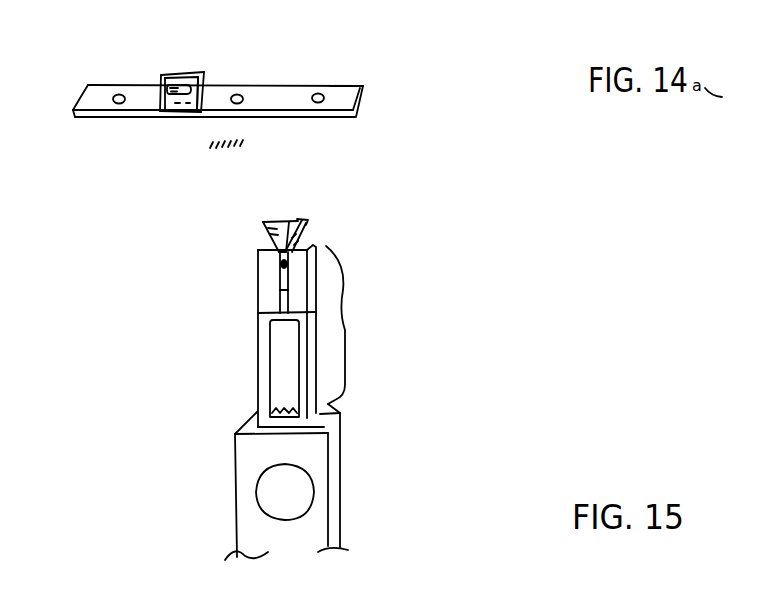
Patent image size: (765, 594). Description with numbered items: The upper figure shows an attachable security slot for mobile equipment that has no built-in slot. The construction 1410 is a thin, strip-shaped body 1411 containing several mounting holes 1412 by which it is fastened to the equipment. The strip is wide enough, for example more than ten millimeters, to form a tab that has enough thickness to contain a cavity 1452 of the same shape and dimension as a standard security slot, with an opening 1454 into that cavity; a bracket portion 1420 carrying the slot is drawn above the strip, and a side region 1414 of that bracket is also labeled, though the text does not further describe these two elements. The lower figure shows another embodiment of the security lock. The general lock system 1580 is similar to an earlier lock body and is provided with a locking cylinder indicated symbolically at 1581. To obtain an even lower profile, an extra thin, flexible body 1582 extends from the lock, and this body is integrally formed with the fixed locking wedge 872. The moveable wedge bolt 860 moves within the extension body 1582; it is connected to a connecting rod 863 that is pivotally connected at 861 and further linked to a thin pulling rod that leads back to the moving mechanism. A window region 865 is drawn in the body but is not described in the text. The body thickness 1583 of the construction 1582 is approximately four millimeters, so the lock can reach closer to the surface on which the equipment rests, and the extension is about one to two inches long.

In FIG. 14A, the attachable security slot construction 1410 is at (372, 102).
In FIG. 14A, the body 1411 is at (349, 84).
In FIG. 14A, the mounting holes 1412 is at (243, 95).
In FIG. 14A, the bracket side 1414 is at (198, 116).
In FIG. 14A, the bracket 1420 is at (184, 73).
In FIG. 14A, the cavity 1452 is at (166, 100).
In FIG. 14A, the opening 1454 is at (178, 102).
In FIG. 15, the moveable wedge bolt 860 is at (303, 227).
In FIG. 15, the pivotal connection 861 is at (288, 263).
In FIG. 15, the connecting rod 863 is at (288, 294).
In FIG. 15, the window 865 is at (283, 375).
In FIG. 15, the fixed locking wedge 872 is at (263, 233).
In FIG. 15, the general lock system 1580 is at (340, 479).
In FIG. 15, the locking cylinder 1581 is at (272, 492).
In FIG. 15, the extra thin flexible body 1582 is at (345, 325).
In FIG. 15, the body thickness 1583 is at (318, 367).